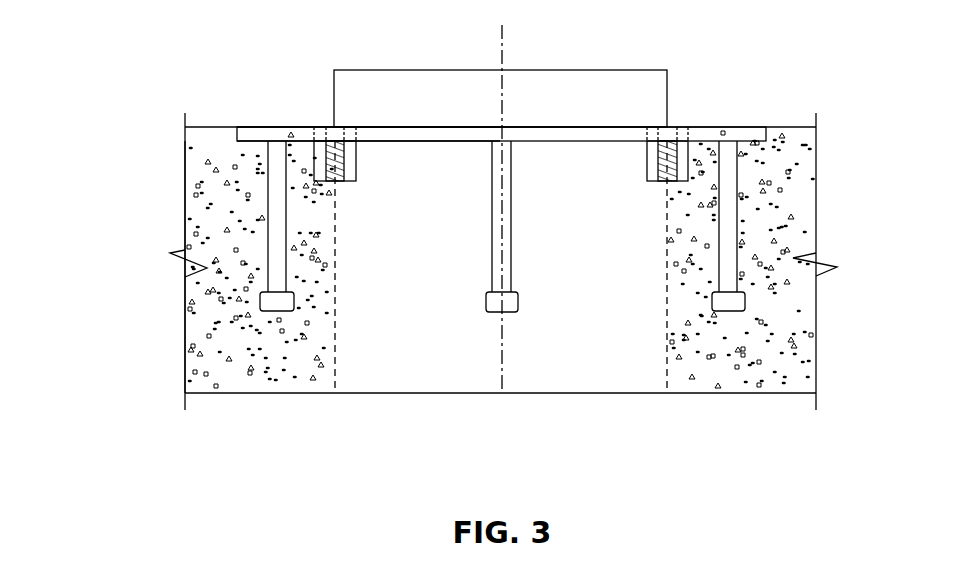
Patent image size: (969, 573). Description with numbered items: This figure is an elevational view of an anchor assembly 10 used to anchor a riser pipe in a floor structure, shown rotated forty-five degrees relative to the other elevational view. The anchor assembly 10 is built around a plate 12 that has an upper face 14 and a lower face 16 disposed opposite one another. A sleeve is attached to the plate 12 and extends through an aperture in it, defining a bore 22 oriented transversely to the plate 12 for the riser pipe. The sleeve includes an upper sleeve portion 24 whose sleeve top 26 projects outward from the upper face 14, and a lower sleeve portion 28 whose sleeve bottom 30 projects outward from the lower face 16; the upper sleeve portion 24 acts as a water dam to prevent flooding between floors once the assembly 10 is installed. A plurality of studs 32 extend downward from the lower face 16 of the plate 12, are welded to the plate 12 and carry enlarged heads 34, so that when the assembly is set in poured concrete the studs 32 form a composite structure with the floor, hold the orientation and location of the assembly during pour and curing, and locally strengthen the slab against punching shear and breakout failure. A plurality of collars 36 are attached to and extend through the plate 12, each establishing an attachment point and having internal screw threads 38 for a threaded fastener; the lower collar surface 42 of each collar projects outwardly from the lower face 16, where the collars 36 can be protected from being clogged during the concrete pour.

The anchor assembly 10 is at (94, 23).
The plate 12 is at (731, 127).
The upper face 14 is at (268, 126).
The lower face 16 is at (246, 142).
The bore 22 is at (376, 375).
The upper sleeve portion 24 is at (624, 83).
The sleeve top 26 is at (534, 70).
The lower sleeve portion 28 is at (450, 368).
The sleeve bottom 30 is at (585, 395).
The studs 32 is at (730, 220).
The enlarged heads 34 is at (728, 312).
The collars 36 is at (356, 165).
The internal screw threads 38 is at (350, 181).
The lower collar surface 42 is at (651, 182).